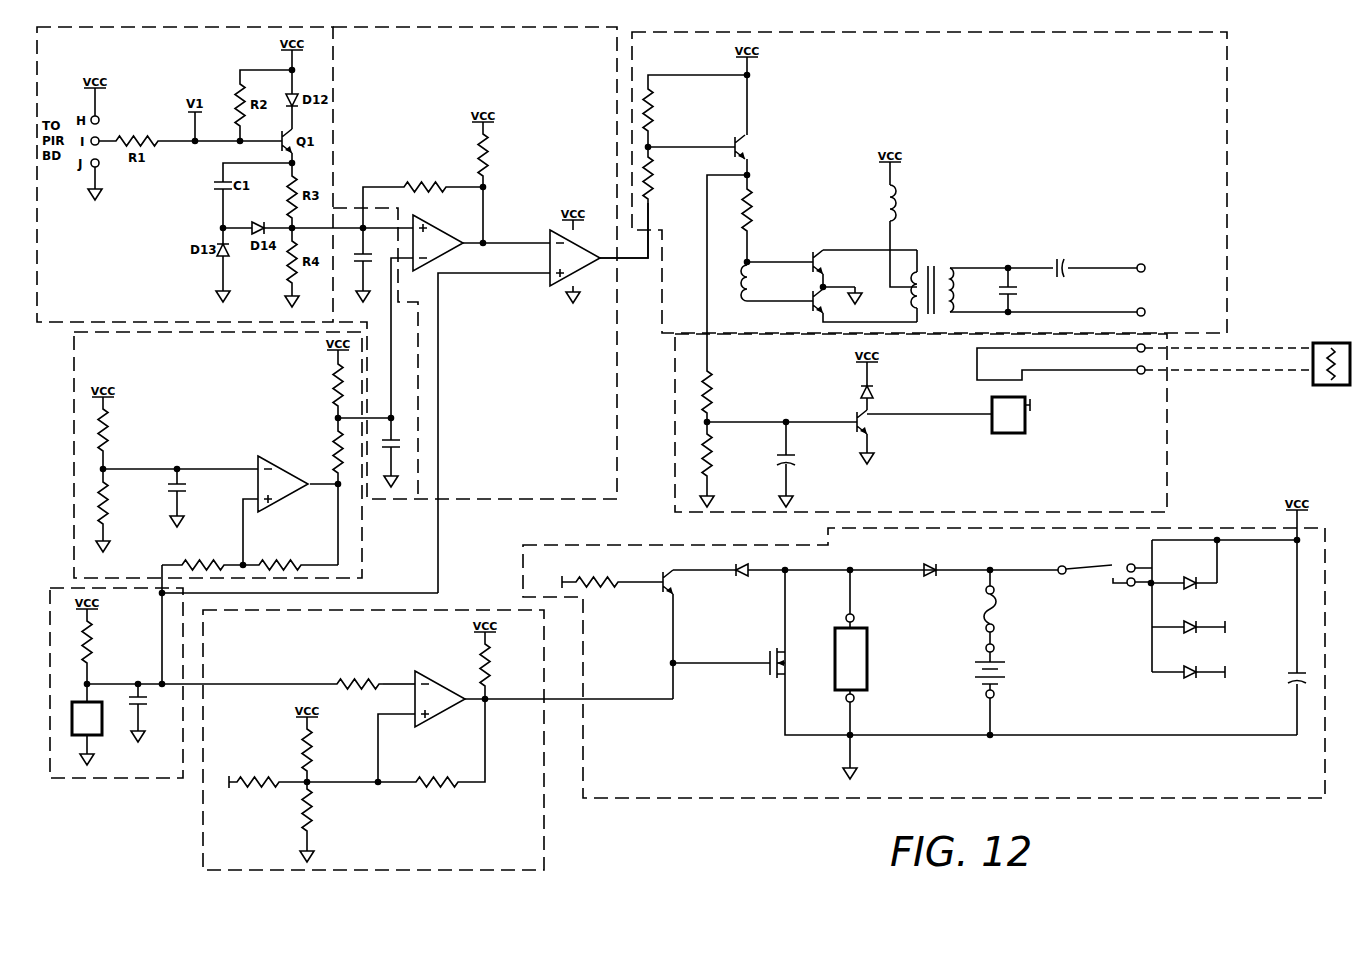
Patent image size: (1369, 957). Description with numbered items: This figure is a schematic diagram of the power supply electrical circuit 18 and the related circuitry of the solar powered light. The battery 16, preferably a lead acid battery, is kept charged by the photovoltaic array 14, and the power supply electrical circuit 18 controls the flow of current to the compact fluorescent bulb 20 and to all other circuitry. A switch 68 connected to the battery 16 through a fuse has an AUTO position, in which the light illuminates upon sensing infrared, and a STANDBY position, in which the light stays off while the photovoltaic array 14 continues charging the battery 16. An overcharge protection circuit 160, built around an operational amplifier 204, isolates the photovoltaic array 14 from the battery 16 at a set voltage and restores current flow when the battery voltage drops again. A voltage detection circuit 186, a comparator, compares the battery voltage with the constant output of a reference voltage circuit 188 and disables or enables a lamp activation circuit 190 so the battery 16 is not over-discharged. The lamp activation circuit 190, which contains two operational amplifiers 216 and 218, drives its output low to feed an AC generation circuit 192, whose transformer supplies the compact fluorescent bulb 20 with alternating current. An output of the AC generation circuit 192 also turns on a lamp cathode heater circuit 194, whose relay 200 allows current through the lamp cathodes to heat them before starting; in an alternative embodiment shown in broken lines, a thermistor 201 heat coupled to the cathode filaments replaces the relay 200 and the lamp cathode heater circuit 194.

The photovoltaic array 14 is at (869, 666).
The battery 16 is at (1000, 677).
The power supply electrical circuit 18 is at (924, 646).
The compact fluorescent bulb 20 is at (1207, 290).
The switch 68 is at (1056, 565).
The overcharge protection circuit 160 is at (438, 740).
The voltage detection circuit 186 is at (362, 545).
The reference voltage circuit 188 is at (130, 780).
The lamp activation circuit 190 is at (490, 310).
The AC generation circuit 192 is at (946, 199).
The lamp cathode heater circuit 194 is at (1012, 416).
The relay 200 is at (1010, 433).
The thermistor 201 is at (1325, 343).
The operational amplifier 204 is at (430, 718).
The operational amplifier 216 is at (452, 255).
The operational amplifier 218 is at (548, 240).